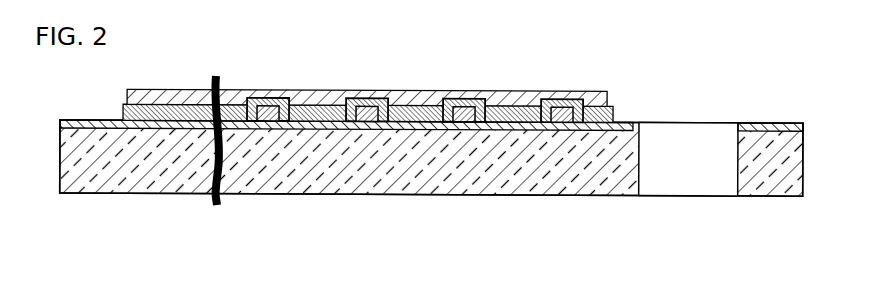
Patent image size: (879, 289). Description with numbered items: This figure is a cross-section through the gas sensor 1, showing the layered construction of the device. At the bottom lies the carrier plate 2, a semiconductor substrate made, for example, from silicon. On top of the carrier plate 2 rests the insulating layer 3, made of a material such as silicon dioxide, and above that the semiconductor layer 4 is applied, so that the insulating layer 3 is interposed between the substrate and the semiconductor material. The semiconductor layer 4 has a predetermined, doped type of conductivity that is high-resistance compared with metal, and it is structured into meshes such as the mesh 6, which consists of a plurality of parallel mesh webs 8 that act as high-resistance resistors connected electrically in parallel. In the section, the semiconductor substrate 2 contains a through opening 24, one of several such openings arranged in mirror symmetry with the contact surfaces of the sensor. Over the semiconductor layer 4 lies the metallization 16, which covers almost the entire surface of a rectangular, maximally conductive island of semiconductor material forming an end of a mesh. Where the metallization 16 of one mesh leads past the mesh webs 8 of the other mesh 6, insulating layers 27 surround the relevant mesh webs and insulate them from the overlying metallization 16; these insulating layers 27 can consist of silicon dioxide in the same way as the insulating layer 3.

The gas sensor 1 is at (703, 55).
The carrier plate 2 is at (770, 142).
The insulating layer 3 is at (631, 121).
The semiconductor layer 4 is at (123, 106).
The mesh 6 is at (468, 96).
The mesh web 8 is at (528, 86).
The metallization 16 is at (245, 89).
The through opening 24 is at (694, 148).
The insulating layer 27 is at (373, 97).